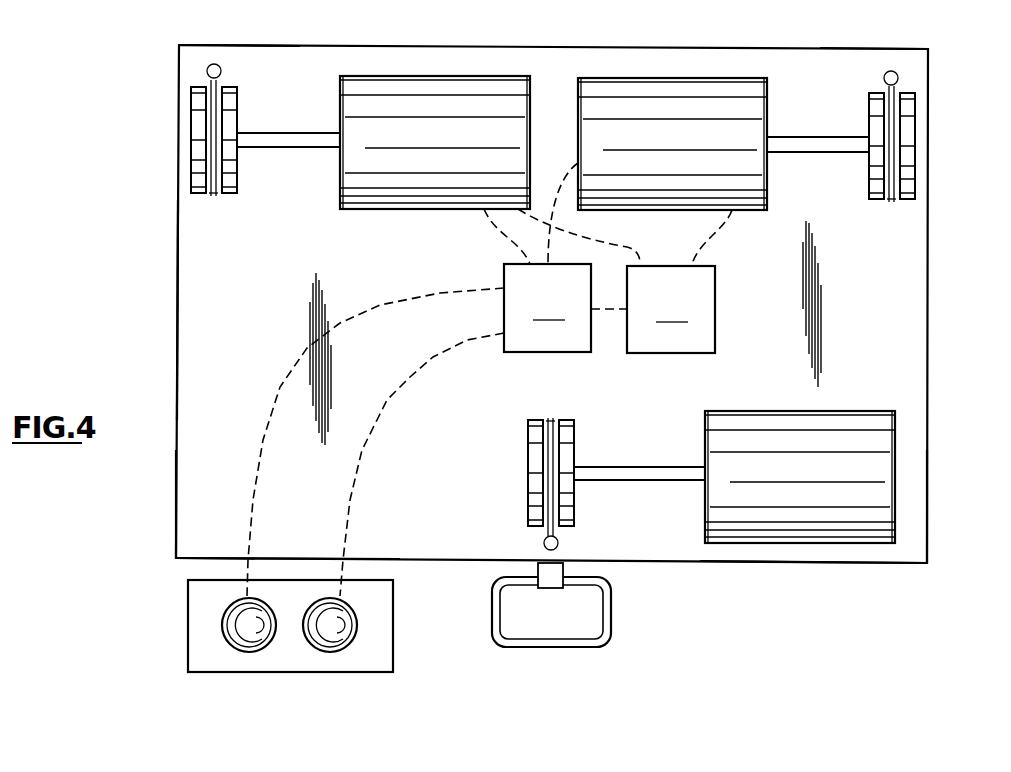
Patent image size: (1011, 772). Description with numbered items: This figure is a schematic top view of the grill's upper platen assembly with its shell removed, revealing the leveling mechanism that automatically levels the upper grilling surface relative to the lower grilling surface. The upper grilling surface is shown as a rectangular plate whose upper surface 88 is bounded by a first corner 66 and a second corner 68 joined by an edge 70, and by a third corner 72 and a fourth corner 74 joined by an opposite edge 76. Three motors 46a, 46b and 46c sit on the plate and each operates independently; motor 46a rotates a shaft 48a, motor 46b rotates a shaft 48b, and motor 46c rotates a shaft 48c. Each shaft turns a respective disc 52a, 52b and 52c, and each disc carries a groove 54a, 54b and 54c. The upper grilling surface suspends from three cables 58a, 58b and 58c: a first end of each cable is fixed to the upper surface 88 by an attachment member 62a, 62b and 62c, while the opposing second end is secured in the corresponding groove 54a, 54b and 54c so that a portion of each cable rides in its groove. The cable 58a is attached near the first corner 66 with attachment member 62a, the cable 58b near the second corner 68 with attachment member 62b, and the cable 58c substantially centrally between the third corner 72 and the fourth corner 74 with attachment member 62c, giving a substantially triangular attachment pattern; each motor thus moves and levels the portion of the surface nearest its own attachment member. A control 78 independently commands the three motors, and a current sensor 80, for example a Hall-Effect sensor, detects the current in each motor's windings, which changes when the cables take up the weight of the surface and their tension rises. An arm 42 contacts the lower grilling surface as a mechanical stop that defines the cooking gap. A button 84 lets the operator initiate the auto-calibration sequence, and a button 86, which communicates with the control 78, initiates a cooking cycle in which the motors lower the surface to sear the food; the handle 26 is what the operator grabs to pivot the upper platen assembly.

The handle 26 is at (500, 641).
The arm 42 is at (548, 573).
The motor 46a is at (440, 95).
The motor 46b is at (682, 95).
The motor 46c is at (885, 494).
The shaft 48a is at (300, 136).
The shaft 48b is at (836, 143).
The shaft 48c is at (643, 470).
The disc 52a is at (191, 118).
The disc 52b is at (915, 130).
The disc 52c is at (530, 446).
The groove 54a is at (214, 195).
The groove 54b is at (893, 202).
The groove 54c is at (551, 420).
The cable 58a is at (213, 158).
The cable 58b is at (896, 152).
The cable 58c is at (549, 486).
The attachment member 62a is at (214, 64).
The attachment member 62b is at (898, 76).
The attachment member 62c is at (558, 541).
The first corner 66 is at (179, 45).
The second corner 68 is at (928, 49).
The edge 70 is at (538, 46).
The third corner 72 is at (176, 558).
The fourth corner 74 is at (927, 563).
The edge 76 is at (836, 562).
The control 78 is at (547, 308).
The current sensor 80 is at (671, 309).
The button 84 is at (247, 652).
The button 86 is at (328, 652).
The upper surface 88 is at (196, 357).